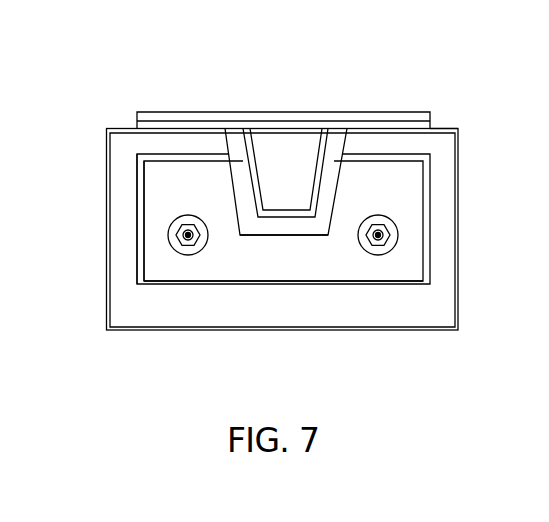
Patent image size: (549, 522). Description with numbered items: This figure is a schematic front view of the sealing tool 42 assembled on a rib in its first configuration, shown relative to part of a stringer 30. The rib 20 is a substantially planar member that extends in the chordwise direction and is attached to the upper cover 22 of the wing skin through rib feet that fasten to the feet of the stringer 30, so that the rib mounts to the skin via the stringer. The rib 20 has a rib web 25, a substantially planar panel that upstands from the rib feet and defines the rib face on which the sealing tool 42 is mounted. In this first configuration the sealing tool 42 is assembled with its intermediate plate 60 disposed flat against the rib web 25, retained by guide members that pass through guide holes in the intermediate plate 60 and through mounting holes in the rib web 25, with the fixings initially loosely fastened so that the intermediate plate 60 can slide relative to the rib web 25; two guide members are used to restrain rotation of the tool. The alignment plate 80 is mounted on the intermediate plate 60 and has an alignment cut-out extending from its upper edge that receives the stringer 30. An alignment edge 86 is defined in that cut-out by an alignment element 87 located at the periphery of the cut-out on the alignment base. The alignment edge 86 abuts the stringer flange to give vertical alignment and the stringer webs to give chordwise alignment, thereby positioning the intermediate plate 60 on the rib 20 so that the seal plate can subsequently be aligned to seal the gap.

The rib 20 is at (433, 127).
The upper cover 22 is at (365, 120).
The rib web 25 is at (293, 313).
The stringer 30 is at (342, 128).
The sealing tool 42 is at (150, 203).
The intermediate plate 60 is at (418, 225).
The alignment plate 80 is at (363, 272).
The alignment edge 86 is at (318, 180).
The alignment element 87 is at (274, 233).